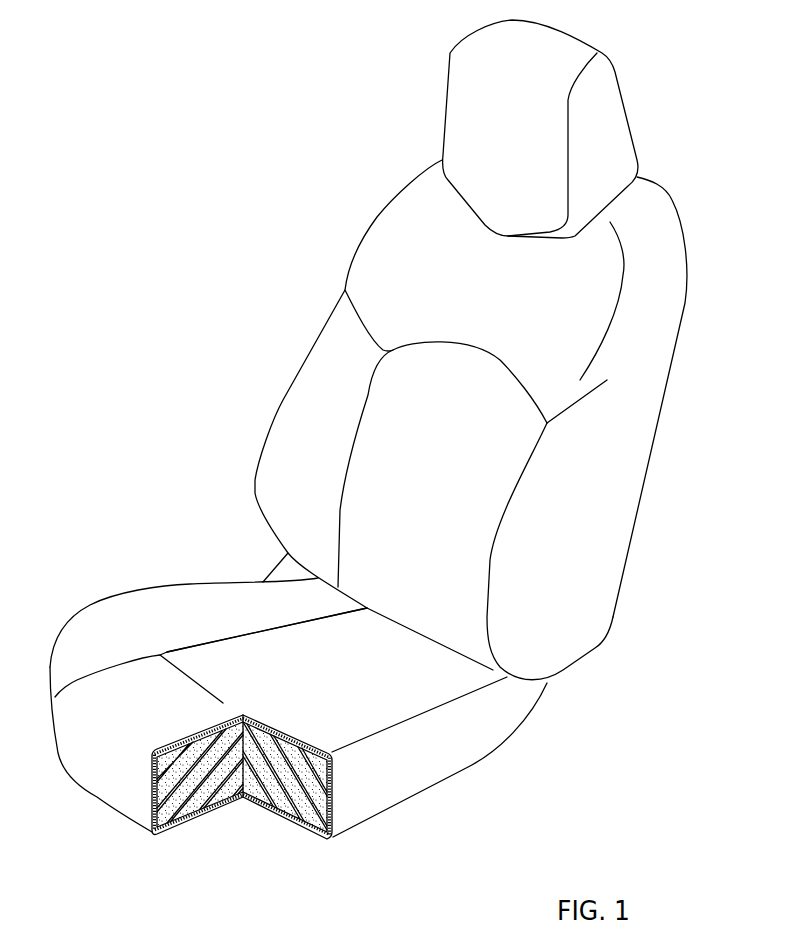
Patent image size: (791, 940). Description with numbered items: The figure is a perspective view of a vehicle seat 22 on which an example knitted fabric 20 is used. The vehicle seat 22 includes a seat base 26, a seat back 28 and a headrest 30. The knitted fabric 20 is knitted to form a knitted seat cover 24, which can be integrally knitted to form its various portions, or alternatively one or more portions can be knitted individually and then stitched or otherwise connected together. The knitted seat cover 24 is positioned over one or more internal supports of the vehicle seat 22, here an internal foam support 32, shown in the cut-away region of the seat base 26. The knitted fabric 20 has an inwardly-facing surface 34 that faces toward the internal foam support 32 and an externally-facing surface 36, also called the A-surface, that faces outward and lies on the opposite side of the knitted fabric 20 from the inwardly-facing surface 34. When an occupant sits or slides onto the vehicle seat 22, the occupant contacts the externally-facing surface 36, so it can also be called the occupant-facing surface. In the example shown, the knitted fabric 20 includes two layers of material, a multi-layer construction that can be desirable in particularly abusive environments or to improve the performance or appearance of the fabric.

The knitted fabric 20 is at (215, 792).
The vehicle seat 22 is at (276, 160).
The knitted seat cover 24 is at (83, 607).
The seat base 26 is at (458, 750).
The seat back 28 is at (622, 498).
The headrest 30 is at (607, 110).
The internal foam support 32 is at (212, 797).
The inwardly-facing surface 34 is at (285, 755).
The externally-facing surface 36 is at (252, 658).